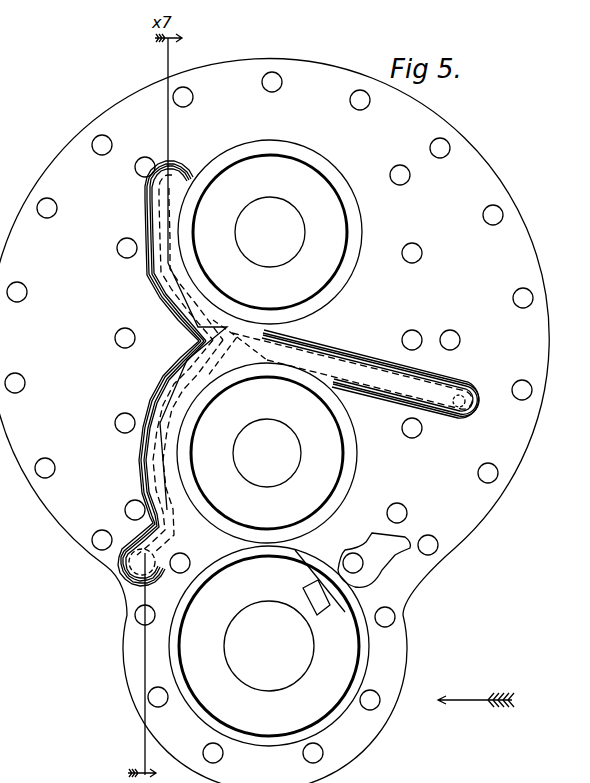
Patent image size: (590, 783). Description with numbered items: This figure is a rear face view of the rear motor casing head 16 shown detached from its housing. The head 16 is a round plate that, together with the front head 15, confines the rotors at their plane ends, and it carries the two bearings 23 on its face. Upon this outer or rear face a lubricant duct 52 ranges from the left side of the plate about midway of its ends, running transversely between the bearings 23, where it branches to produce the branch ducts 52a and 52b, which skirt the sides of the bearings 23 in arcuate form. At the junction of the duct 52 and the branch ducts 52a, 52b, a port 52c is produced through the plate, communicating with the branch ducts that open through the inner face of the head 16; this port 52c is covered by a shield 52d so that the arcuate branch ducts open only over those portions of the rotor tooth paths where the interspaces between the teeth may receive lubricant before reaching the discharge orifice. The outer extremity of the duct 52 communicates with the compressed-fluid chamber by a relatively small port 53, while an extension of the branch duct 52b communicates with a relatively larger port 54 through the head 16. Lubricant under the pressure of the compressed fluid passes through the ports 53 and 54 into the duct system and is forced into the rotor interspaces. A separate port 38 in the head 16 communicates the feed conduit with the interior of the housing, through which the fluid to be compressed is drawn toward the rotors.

The front head 15 is at (419, 780).
The rear head 16 is at (512, 457).
The bearings 23 is at (312, 158).
The port 38 is at (385, 556).
The duct 52 is at (327, 365).
The branch duct 52a is at (157, 280).
The branch duct 52b is at (163, 407).
The port 52c is at (217, 337).
The shield 52d is at (186, 302).
The port 53 is at (462, 398).
The port 54 is at (143, 553).